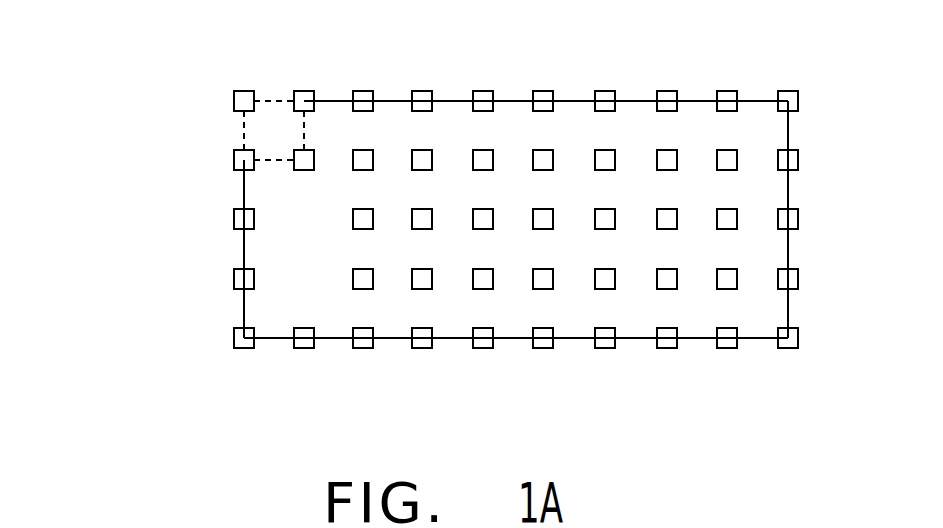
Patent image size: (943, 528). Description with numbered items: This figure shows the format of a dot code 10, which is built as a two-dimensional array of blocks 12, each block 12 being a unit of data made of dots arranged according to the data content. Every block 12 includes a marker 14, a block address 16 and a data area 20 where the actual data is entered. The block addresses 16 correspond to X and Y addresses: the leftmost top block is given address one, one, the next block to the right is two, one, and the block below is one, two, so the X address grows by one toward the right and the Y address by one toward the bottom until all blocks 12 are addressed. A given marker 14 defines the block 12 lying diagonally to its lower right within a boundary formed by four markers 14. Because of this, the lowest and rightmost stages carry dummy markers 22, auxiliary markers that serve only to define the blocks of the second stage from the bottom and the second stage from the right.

The dot code 10 is at (511, 238).
The block 12 is at (244, 129).
The marker 14 is at (233, 92).
The block address 16 is at (266, 100).
The data area 20 is at (393, 321).
The dummy marker 22 is at (799, 101).